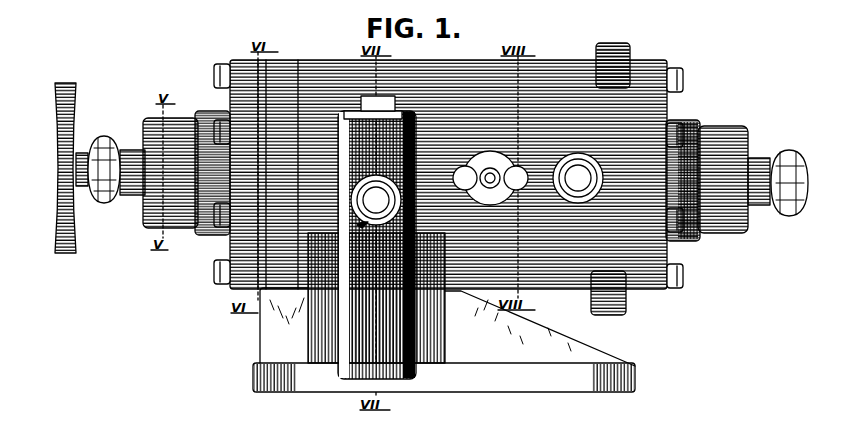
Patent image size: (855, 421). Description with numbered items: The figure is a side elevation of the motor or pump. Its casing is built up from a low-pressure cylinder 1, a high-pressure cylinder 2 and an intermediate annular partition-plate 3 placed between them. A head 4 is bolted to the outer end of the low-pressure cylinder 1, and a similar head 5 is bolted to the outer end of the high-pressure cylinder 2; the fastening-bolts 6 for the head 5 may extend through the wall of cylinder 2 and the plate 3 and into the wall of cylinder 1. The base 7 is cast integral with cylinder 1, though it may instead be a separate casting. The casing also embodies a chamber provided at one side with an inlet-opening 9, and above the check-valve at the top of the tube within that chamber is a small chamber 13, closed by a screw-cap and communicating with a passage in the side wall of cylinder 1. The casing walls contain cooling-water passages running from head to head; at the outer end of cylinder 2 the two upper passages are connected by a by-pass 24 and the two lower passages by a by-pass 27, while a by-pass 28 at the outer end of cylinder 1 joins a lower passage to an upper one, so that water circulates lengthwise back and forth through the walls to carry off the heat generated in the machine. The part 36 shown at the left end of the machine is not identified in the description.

The low-pressure cylinder 1 is at (448, 165).
The high-pressure cylinder 2 is at (578, 122).
The intermediate annular partition-plate 3 is at (490, 124).
The head 4 is at (175, 164).
The head 5 is at (718, 172).
The fastening-bolts 6 is at (673, 68).
The base 7 is at (624, 374).
The inlet-opening 9 is at (377, 245).
The small chamber 13 is at (382, 96).
The by-pass 24 is at (612, 54).
The by-pass 27 is at (605, 308).
The by-pass 28 is at (282, 122).
The hand wheel 36 is at (431, 168).